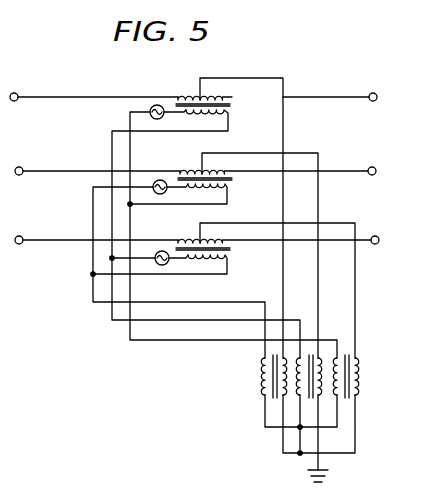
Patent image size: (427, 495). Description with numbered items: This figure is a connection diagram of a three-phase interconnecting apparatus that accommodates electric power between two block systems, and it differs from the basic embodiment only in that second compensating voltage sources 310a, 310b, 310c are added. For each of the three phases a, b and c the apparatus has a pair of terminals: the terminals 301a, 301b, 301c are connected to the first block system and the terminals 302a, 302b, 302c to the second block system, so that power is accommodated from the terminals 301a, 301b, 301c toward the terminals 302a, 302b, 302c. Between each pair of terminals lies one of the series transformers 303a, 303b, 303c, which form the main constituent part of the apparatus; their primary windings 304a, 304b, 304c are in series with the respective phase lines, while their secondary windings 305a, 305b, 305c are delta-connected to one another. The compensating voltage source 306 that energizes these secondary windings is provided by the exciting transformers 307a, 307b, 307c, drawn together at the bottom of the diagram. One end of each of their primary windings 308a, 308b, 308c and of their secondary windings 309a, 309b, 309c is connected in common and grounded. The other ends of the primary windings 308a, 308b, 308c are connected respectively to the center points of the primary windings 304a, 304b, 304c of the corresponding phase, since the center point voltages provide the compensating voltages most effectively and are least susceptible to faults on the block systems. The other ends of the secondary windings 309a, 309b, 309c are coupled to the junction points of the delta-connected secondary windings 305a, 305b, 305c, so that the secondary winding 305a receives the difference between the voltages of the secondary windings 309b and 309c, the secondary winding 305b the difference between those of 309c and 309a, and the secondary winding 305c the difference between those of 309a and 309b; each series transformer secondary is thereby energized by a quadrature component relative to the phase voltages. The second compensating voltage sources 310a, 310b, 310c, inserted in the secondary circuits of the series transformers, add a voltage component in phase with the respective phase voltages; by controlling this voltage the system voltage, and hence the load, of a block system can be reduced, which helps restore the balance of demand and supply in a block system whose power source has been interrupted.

The terminal 301a is at (15, 92).
The terminal 301b is at (19, 167).
The terminal 301c is at (19, 236).
The terminal 302a is at (370, 93).
The terminal 302b is at (370, 167).
The terminal 302c is at (373, 236).
The series transformer 303a is at (243, 101).
The series transformer 303b is at (240, 179).
The series transformer 303c is at (240, 248).
The primary winding 304a is at (180, 92).
The primary winding 304b is at (178, 170).
The primary winding 304c is at (213, 237).
The secondary winding 305a is at (229, 121).
The secondary winding 305b is at (188, 192).
The secondary winding 305c is at (212, 266).
The compensating voltage source 306 is at (405, 350).
The exciting transformer 307a is at (268, 405).
The exciting transformer 307b is at (312, 410).
The exciting transformer 307c is at (357, 392).
The primary winding 308a is at (266, 360).
The primary winding 308b is at (322, 360).
The primary winding 308c is at (358, 368).
The secondary winding 309a is at (263, 385).
The secondary winding 309b is at (300, 400).
The secondary winding 309c is at (335, 405).
The second compensating voltage source 310a is at (151, 106).
The second compensating voltage source 310b is at (153, 183).
The second compensating voltage source 310c is at (168, 266).